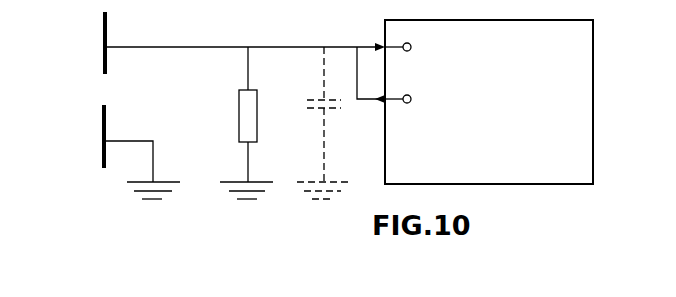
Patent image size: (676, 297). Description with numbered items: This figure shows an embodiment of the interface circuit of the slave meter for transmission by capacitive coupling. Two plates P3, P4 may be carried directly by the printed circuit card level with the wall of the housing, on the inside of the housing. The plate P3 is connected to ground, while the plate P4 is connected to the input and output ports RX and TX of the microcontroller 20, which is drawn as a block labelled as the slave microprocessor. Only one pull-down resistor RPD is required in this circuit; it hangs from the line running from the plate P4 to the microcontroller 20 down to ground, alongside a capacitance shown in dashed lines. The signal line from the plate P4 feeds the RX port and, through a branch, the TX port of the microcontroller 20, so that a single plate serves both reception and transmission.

The microcontroller 20 is at (489, 120).
The plate P4 is at (81, 43).
The plate P3 is at (110, 152).
The pull-down resistor RPD is at (225, 123).